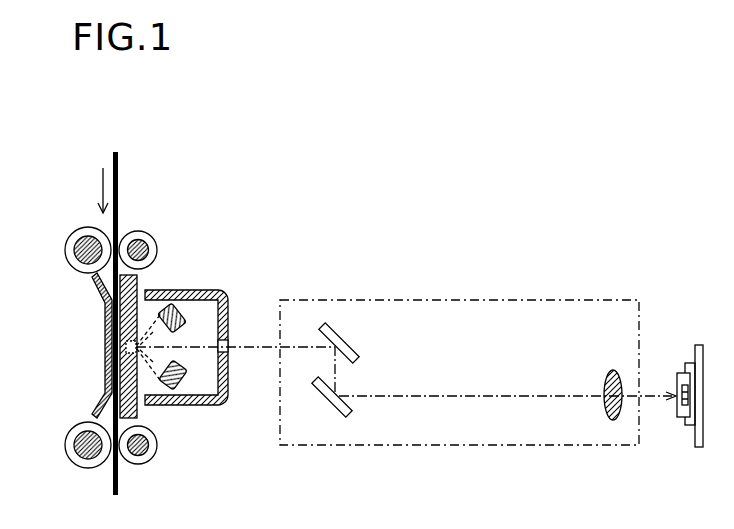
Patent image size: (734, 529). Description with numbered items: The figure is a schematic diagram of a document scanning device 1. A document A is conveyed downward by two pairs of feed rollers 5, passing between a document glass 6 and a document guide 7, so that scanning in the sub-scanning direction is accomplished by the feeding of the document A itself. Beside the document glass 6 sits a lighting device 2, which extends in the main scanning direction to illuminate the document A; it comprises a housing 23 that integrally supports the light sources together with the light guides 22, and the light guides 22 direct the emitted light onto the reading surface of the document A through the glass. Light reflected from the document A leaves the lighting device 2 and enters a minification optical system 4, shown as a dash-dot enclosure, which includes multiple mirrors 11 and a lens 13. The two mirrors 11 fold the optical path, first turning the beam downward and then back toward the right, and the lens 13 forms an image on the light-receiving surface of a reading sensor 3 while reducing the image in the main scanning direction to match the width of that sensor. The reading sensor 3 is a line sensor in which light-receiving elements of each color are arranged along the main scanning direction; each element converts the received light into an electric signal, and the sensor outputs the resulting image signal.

The document scanning device 1 is at (459, 344).
The lighting device 2 is at (188, 350).
The reading sensor 3 is at (677, 404).
The minification optical system 4 is at (433, 301).
The feed rollers 5 is at (65, 250).
The document glass 6 is at (137, 285).
The document guide 7 is at (106, 372).
The mirrors 11 is at (342, 339).
The lens 13 is at (613, 371).
The light guide 22 is at (183, 312).
The housing 23 is at (203, 289).
The document A is at (118, 197).